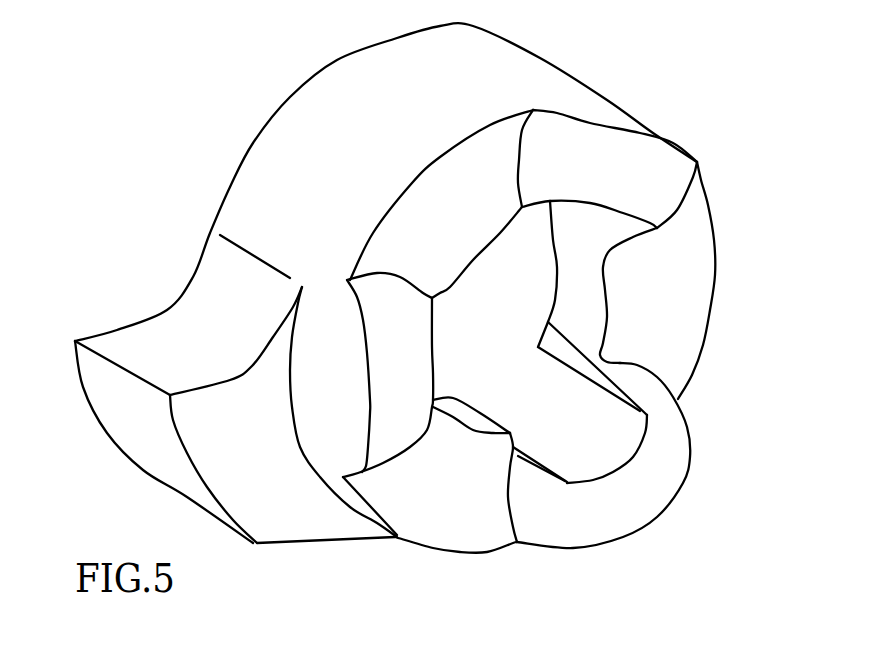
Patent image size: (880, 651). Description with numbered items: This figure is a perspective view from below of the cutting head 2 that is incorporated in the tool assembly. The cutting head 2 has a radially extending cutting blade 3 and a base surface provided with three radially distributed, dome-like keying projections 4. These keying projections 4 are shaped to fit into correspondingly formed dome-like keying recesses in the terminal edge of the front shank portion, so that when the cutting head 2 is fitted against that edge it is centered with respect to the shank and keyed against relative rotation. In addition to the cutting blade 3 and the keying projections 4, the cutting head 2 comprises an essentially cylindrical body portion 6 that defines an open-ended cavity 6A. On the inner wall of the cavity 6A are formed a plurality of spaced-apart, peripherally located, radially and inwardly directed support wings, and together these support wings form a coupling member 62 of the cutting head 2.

The cutting head 2 is at (247, 93).
The cutting blade 3 is at (113, 380).
The keying projections 4 is at (378, 315).
The body portion 6 is at (383, 130).
The cavity 6A is at (458, 296).
The coupling member 62 is at (545, 300).